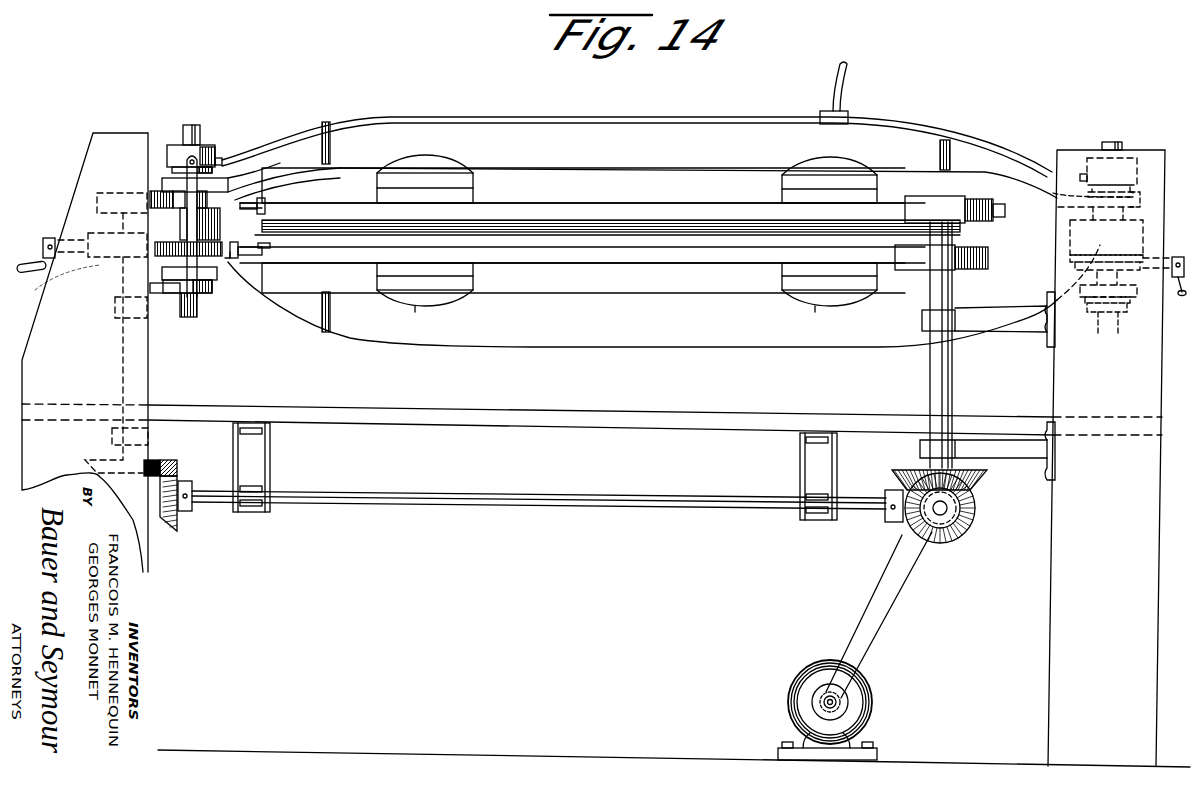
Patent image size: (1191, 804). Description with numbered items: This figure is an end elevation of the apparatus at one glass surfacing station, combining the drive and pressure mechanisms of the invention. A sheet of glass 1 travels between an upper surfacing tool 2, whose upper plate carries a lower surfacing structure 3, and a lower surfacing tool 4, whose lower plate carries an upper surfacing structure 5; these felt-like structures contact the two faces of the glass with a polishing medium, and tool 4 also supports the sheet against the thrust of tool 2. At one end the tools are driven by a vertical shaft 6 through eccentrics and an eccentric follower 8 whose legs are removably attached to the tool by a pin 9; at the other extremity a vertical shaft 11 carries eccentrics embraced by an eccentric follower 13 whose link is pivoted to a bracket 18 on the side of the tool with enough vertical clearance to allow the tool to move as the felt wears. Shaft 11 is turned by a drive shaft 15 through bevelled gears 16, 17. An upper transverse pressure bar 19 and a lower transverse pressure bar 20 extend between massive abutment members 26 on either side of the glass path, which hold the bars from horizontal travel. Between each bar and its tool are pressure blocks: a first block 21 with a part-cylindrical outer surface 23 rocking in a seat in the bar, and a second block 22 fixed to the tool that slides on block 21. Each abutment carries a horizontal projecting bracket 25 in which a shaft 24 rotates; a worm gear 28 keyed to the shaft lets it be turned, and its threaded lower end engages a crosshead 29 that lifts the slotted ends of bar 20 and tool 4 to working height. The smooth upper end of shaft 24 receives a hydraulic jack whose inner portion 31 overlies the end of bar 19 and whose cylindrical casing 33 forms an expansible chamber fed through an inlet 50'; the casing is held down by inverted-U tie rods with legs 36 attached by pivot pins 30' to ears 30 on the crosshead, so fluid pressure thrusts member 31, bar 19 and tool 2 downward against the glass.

The sheet of glass 1 is at (768, 238).
The upper surfacing tool 2 is at (820, 213).
The lower surfacing structure 3 is at (712, 228).
The lower surfacing tool 4 is at (338, 248).
The upper surfacing structure 5 is at (655, 248).
The vertical shaft 6 is at (135, 392).
The eccentric follower 8 is at (80, 235).
The removable pin 9 is at (245, 196).
The vertical shaft 11 is at (950, 378).
The upper eccentric follower 13 is at (922, 212).
The drive shaft 15 is at (500, 505).
The bevelled gear 16 is at (165, 462).
The bevelled gear 17 is at (177, 525).
The bracket 18 is at (265, 205).
The upper transverse pressure bar 19 is at (408, 125).
The lower transverse pressure bar 20 is at (345, 333).
The first block 21 is at (440, 165).
The second block 22 is at (470, 197).
The part-cylindrical outer surface 23 is at (416, 308).
The shaft 24 is at (195, 125).
The horizontal projecting bracket 25 is at (222, 232).
The abutment member 26 is at (93, 140).
The worm gear 28 is at (160, 267).
The crosshead 29 is at (207, 299).
The ear 30 is at (183, 320).
The pivot pin 30' is at (132, 314).
The inner portion of hydraulic jack 31 is at (1140, 200).
The cylindrical casing 33 is at (173, 152).
The tie rod leg 36 is at (160, 216).
The inlet 50' is at (672, 156).